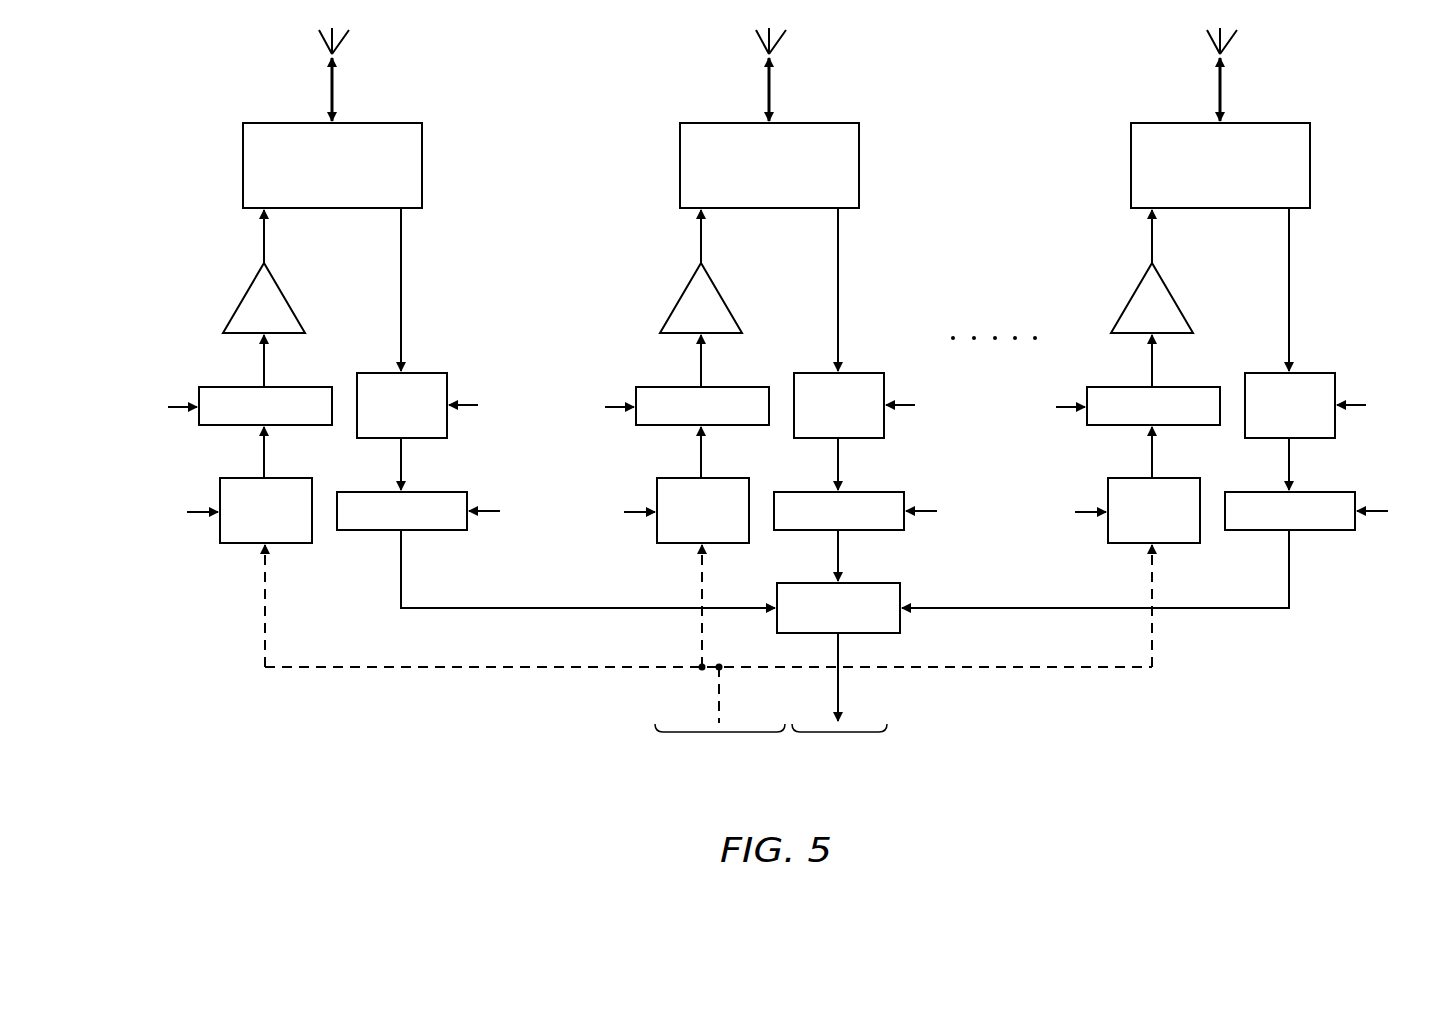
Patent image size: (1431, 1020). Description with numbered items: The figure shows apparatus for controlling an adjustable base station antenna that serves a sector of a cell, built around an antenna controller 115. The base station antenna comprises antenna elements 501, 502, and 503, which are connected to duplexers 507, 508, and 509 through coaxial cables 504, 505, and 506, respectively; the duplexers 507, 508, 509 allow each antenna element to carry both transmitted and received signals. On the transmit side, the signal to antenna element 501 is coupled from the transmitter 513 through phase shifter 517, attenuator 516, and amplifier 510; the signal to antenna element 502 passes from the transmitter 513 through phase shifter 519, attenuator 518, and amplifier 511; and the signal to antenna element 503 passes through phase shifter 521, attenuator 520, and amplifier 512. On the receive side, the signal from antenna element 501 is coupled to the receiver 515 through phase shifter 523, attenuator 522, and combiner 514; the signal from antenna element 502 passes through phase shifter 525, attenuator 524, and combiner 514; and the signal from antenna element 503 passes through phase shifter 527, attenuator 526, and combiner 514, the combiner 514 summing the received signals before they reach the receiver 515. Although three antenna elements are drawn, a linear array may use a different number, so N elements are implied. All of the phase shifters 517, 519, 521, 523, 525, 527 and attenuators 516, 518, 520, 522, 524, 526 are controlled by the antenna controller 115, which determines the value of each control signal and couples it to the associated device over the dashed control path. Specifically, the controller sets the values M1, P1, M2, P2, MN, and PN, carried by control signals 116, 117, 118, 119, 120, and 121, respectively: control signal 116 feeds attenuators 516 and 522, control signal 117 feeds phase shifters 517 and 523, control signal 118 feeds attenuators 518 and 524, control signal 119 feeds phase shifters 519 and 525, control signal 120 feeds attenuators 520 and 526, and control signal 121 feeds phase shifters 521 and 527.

The antenna element 501 is at (323, 41).
The antenna element 502 is at (745, 40).
The antenna element 503 is at (1196, 40).
The coaxial cable 504 is at (330, 91).
The coaxial cable 505 is at (739, 89).
The coaxial cable 506 is at (1190, 89).
The duplexer 507 is at (370, 123).
The duplexer 508 is at (769, 152).
The duplexer 509 is at (1220, 152).
The amplifier 510 is at (285, 296).
The amplifier 511 is at (714, 271).
The amplifier 512 is at (1165, 271).
The transmitter 513 is at (720, 728).
The combiner 514 is at (853, 583).
The receiver 515 is at (839, 711).
The attenuator 516 is at (283, 387).
The phase shifter 517 is at (275, 478).
The attenuator 518 is at (702, 380).
The phase shifter 519 is at (707, 485).
The attenuator 520 is at (1153, 380).
The phase shifter 521 is at (1158, 485).
The attenuator 522 is at (420, 492).
The phase shifter 523 is at (408, 373).
The attenuator 524 is at (839, 509).
The phase shifter 525 is at (842, 323).
The attenuator 526 is at (1128, 523).
The phase shifter 527 is at (1293, 323).
The antenna controller 115 is at (535, 707).
The control signal 116 is at (150, 430).
The control signal 117 is at (169, 538).
The control signal 118 is at (766, 483).
The control signal 119 is at (767, 480).
The control signal 120 is at (1217, 483).
The control signal 121 is at (1218, 480).